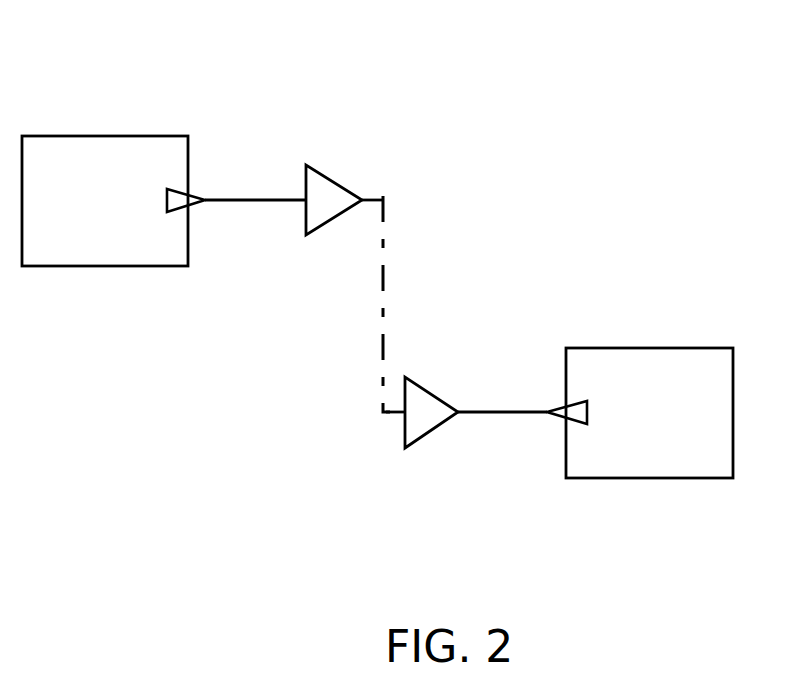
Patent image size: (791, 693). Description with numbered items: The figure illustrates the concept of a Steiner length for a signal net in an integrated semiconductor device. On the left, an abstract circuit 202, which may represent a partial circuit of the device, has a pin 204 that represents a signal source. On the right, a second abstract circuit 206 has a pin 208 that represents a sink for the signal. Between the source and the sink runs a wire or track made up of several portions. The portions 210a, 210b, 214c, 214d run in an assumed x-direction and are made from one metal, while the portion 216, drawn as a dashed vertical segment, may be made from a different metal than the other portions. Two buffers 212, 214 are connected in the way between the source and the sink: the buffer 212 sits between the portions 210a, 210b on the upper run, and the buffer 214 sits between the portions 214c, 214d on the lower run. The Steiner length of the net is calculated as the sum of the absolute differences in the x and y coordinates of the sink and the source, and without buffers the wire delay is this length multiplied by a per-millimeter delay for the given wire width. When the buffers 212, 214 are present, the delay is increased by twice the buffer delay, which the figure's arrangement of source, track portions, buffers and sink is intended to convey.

The abstract circuit 202 is at (108, 200).
The pin 204 is at (202, 193).
The second abstract circuit 206 is at (683, 427).
The pin 208 is at (557, 402).
The wire portion 210a is at (284, 193).
The wire portion 210b is at (368, 196).
The buffer 212 is at (344, 176).
The buffer 214 is at (432, 453).
The wire portion 214c is at (388, 426).
The wire portion 214d is at (527, 429).
The wire portion 216 is at (380, 306).